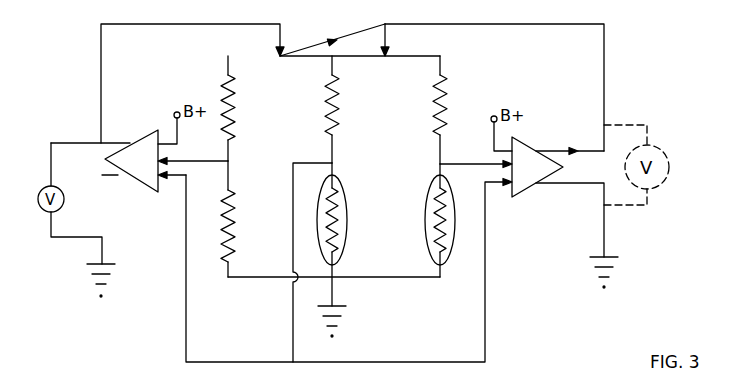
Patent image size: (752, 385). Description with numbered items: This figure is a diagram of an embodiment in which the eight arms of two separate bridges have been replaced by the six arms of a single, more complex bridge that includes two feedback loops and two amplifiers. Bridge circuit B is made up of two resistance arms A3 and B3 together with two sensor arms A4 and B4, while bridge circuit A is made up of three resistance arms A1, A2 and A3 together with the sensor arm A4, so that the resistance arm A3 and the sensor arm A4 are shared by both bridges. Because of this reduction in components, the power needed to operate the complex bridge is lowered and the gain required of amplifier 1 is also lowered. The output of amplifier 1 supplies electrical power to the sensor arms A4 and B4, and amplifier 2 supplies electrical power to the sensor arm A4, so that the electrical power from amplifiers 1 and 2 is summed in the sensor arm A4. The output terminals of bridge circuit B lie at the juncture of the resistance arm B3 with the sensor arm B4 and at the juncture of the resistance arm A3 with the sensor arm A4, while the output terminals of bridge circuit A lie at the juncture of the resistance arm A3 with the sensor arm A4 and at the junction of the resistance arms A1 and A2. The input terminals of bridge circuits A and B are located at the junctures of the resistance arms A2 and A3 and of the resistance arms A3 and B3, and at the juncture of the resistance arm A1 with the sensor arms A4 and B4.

The amplifier 1 is at (537, 167).
The amplifier 2 is at (131, 161).
The bridge circuit A is at (304, 257).
The bridge circuit B is at (450, 164).
The resistance arm A1 is at (240, 219).
The resistance arm A2 is at (240, 108).
The resistance arm A3 is at (345, 109).
The sensor arm A4 is at (346, 234).
The resistance arm B3 is at (452, 110).
The sensor arm B4 is at (453, 220).